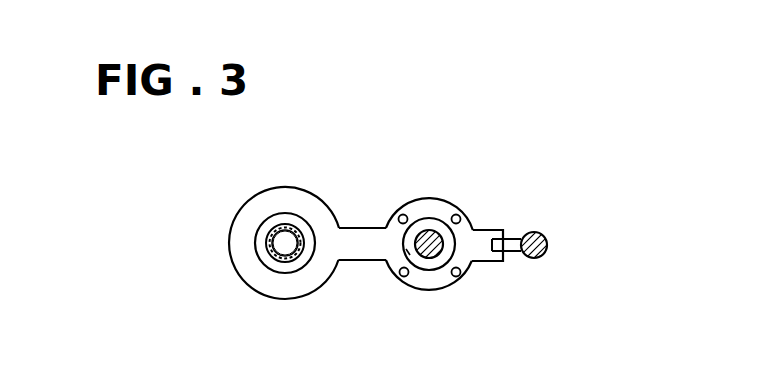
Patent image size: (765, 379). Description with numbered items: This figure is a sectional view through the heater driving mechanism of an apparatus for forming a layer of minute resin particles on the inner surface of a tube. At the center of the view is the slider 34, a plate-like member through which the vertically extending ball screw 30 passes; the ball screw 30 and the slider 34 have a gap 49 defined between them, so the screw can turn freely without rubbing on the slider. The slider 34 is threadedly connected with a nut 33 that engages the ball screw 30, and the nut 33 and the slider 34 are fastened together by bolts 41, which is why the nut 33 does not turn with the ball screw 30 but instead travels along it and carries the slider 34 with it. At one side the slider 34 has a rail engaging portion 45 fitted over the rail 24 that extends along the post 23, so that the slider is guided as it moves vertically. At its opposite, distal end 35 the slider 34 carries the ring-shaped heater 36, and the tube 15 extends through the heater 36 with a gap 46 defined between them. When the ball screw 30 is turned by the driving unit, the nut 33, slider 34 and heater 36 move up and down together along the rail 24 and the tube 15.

The tube 15 is at (270, 252).
The post 23 is at (546, 234).
The rail 24 is at (513, 240).
The ball screw 30 is at (430, 231).
The nut 33 is at (428, 271).
The slider 34 is at (411, 192).
The distal end 35 is at (343, 227).
The heater 36 is at (288, 187).
The bolts 41 is at (400, 215).
The rail engaging portion 45 is at (495, 230).
The gap 46 is at (259, 243).
The gap 49 is at (408, 253).